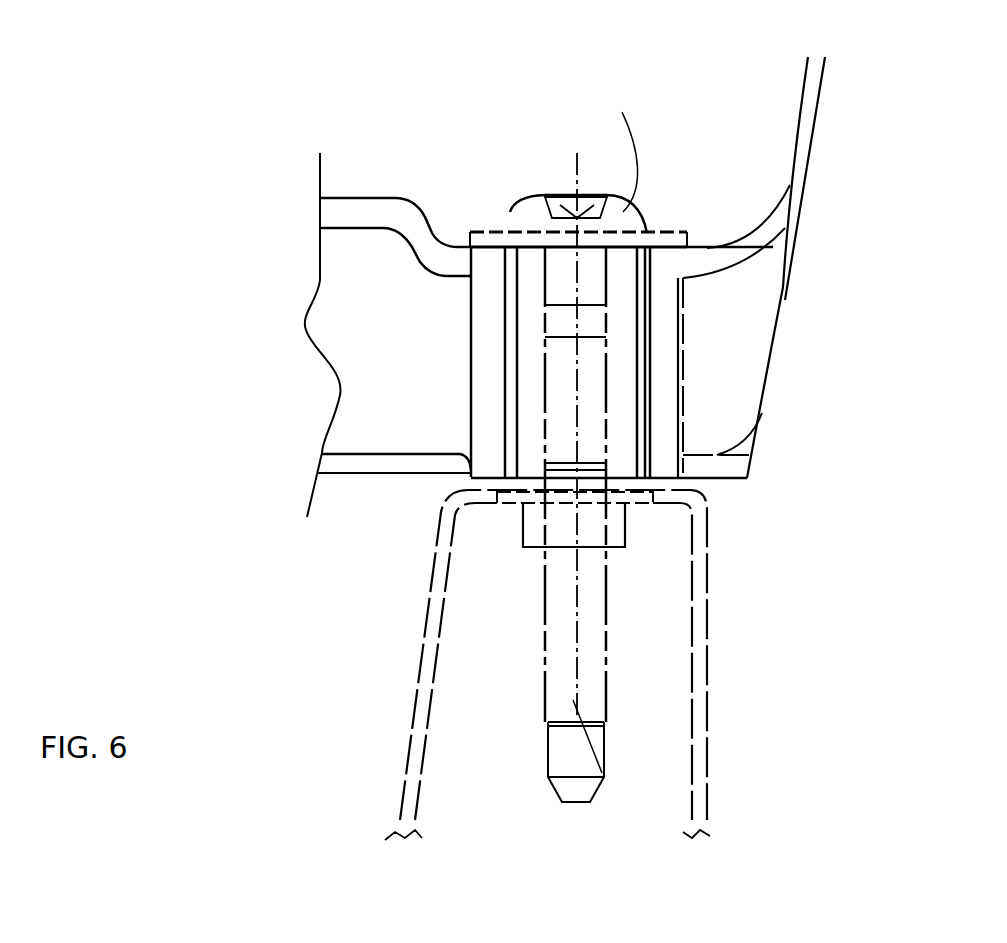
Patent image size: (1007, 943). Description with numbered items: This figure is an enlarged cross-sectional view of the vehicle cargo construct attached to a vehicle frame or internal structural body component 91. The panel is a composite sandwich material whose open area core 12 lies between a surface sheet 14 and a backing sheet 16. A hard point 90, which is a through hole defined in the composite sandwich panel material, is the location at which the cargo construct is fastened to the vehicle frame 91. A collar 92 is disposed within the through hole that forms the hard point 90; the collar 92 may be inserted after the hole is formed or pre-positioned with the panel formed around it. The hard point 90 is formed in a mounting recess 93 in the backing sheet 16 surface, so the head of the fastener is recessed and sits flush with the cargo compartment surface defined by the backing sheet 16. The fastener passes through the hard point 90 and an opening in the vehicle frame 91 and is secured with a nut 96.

The open area core 12 is at (363, 387).
The surface sheet 14 is at (390, 460).
The backing sheet 16 is at (375, 198).
The hard point 90 is at (650, 253).
The vehicle frame or internal structural body component 91 is at (700, 552).
The collar 92 is at (645, 407).
The mounting recess 93 is at (706, 248).
The nut 96 is at (615, 533).